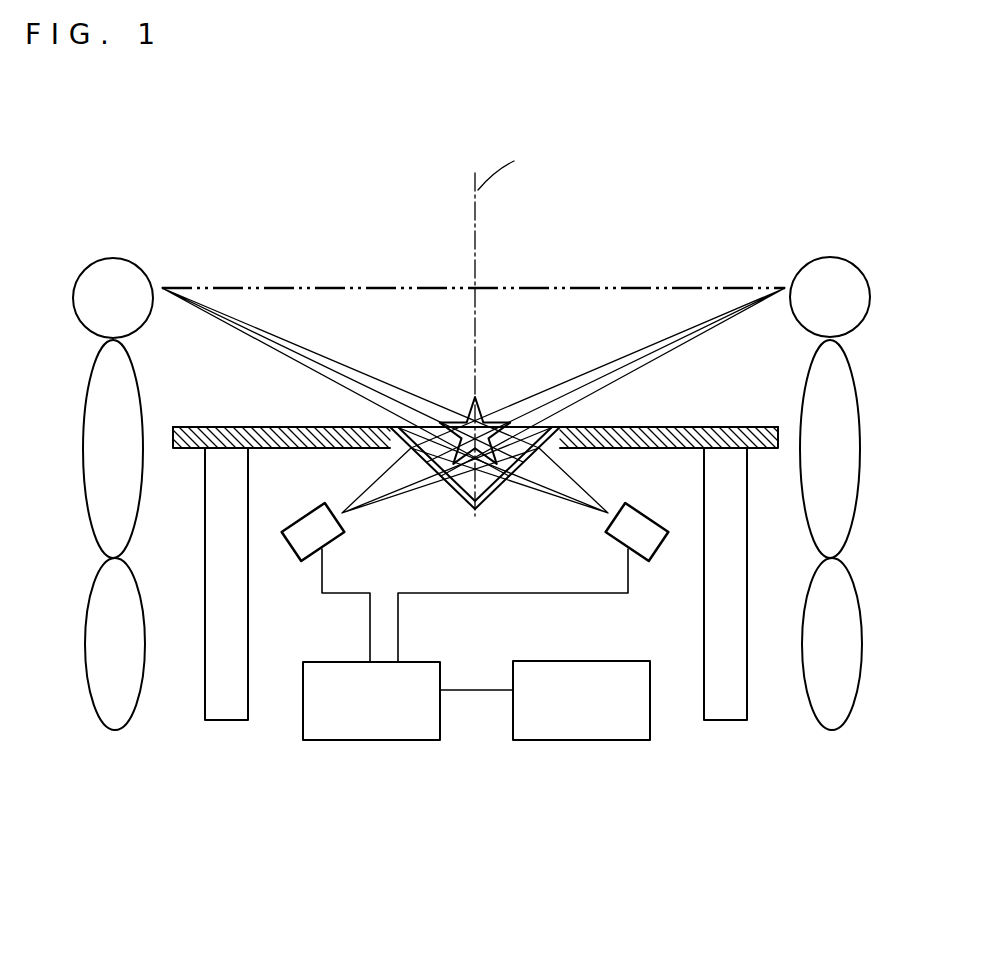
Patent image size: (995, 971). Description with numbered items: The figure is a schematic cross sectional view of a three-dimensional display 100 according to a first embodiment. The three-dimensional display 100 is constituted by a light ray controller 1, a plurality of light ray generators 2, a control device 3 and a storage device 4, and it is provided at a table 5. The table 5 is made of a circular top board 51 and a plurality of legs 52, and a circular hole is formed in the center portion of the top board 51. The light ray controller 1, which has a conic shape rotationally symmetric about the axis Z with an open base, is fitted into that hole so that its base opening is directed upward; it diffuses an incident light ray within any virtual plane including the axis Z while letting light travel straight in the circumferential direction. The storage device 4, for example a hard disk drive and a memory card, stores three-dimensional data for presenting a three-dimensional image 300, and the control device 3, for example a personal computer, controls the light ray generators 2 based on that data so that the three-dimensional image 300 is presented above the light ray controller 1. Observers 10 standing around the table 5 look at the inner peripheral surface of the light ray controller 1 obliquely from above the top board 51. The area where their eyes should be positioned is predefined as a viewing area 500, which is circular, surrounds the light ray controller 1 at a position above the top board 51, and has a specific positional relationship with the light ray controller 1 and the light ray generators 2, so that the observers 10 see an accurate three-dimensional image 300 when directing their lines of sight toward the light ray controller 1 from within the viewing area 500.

The light ray controller 1 is at (452, 494).
The light ray generators 2 is at (298, 520).
The control device 3 is at (330, 661).
The storage device 4 is at (621, 661).
The table 5 is at (226, 422).
The top board 51 is at (712, 427).
The legs 52 is at (204, 664).
The observers 10 is at (101, 260).
The three-dimensional display 100 is at (599, 764).
The three-dimensional image 300 is at (447, 422).
The viewing area 500 is at (668, 283).